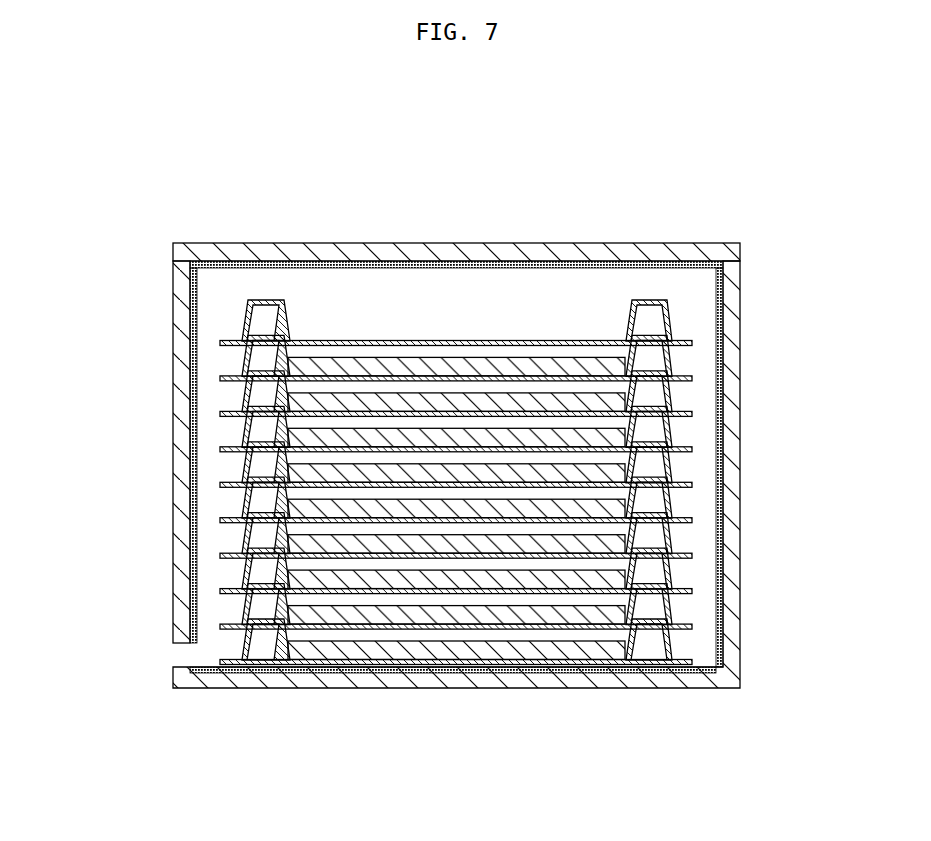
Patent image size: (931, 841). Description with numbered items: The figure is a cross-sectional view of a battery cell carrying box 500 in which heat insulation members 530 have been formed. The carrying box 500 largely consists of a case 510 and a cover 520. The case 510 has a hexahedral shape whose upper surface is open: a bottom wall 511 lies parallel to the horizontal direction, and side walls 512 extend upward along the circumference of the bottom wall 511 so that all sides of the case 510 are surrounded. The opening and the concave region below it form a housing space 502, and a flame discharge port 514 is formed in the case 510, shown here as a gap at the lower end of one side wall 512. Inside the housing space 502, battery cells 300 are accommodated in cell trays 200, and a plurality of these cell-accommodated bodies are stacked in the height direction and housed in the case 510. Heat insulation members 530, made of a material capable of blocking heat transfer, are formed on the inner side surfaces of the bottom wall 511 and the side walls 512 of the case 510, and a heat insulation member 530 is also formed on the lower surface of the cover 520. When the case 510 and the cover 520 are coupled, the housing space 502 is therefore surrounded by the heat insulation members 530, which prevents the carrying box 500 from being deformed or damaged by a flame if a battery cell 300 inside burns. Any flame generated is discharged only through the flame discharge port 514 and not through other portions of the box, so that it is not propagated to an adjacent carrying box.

The battery cell carrying box 500 is at (308, 113).
The case 510 is at (176, 289).
The cover 520 is at (376, 256).
The bottom wall 511 is at (263, 682).
The side walls 512 is at (182, 470).
The flame discharge port 514 is at (182, 660).
The heat insulation members 530 is at (290, 261).
The housing space 502 is at (510, 303).
The cell tray 200 is at (692, 344).
The battery cells 300 is at (597, 366).